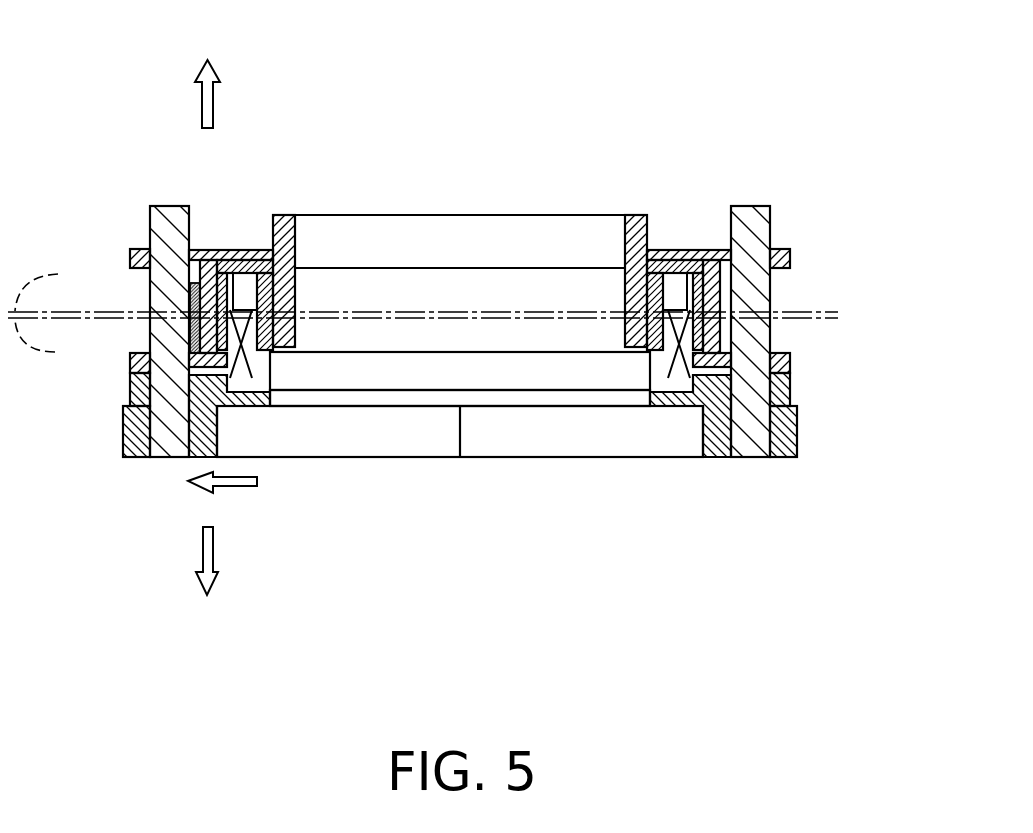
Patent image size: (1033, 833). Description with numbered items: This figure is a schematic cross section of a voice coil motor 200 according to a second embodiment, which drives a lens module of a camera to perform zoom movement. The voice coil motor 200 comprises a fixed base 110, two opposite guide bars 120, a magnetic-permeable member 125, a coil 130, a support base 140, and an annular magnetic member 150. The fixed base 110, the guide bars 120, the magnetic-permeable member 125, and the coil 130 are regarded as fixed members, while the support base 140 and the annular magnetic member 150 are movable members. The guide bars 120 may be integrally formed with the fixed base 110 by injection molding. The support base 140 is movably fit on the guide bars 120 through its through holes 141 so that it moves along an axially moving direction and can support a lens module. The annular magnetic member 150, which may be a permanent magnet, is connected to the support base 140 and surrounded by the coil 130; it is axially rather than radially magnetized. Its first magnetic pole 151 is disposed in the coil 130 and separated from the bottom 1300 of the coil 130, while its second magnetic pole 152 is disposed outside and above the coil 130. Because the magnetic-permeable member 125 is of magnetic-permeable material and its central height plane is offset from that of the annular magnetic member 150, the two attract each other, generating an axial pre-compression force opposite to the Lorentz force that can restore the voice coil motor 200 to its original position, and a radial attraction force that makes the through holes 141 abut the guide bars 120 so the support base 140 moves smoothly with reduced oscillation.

The voice coil motor 200 is at (70, 32).
The fixed base 110 is at (125, 431).
The guide bars 120 is at (167, 222).
The magnetic-permeable member 125 is at (193, 297).
The coil 130 is at (230, 384).
The bottom of the coil 1300 is at (279, 398).
The support base 140 is at (238, 249).
The through holes 141 is at (203, 250).
The annular magnetic member 150 is at (674, 290).
The first magnetic pole 151 is at (283, 354).
The second magnetic pole 152 is at (273, 248).